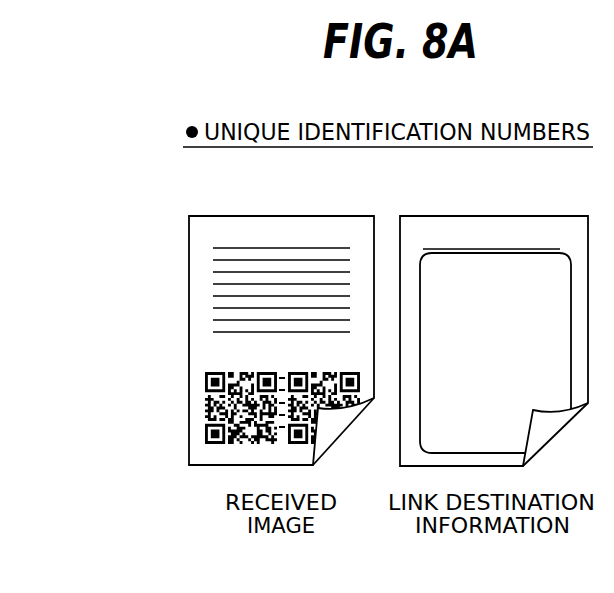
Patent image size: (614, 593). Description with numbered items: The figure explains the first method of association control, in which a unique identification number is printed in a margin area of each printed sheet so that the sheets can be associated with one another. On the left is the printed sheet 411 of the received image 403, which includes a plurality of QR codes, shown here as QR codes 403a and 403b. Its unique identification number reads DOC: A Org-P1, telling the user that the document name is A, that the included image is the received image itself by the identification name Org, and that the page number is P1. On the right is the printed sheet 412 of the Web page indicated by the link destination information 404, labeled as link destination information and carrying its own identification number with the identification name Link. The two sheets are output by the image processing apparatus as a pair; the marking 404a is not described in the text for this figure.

The printed sheet of the received image 411 is at (212, 216).
The printed sheet of the Web page 412 is at (552, 216).
The received image 403 is at (230, 300).
The QR code 403a is at (218, 412).
The QR code 403b is at (312, 413).
The link destination information 404 is at (548, 383).
The link information 404a is at (609, 447).